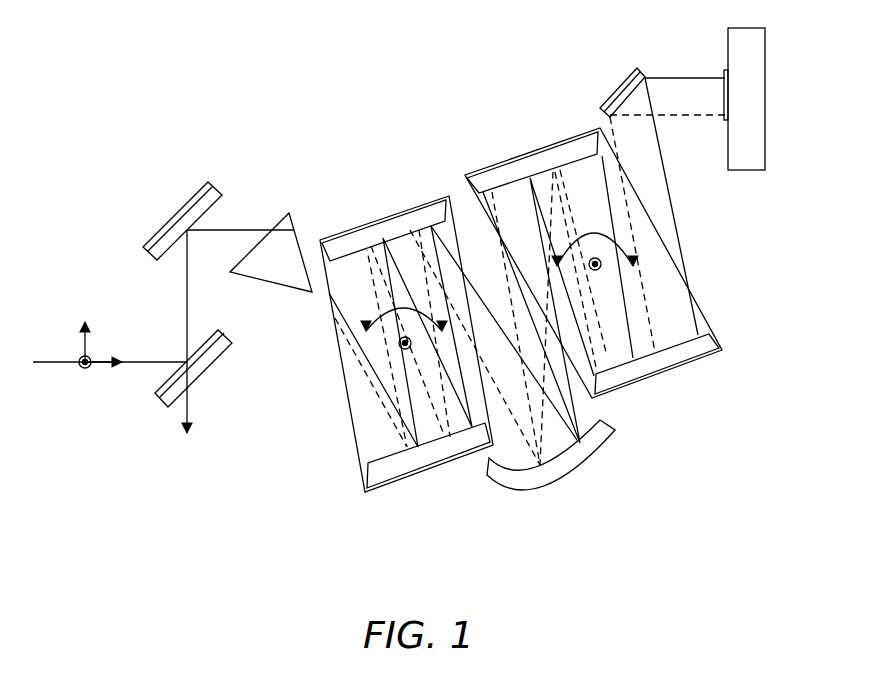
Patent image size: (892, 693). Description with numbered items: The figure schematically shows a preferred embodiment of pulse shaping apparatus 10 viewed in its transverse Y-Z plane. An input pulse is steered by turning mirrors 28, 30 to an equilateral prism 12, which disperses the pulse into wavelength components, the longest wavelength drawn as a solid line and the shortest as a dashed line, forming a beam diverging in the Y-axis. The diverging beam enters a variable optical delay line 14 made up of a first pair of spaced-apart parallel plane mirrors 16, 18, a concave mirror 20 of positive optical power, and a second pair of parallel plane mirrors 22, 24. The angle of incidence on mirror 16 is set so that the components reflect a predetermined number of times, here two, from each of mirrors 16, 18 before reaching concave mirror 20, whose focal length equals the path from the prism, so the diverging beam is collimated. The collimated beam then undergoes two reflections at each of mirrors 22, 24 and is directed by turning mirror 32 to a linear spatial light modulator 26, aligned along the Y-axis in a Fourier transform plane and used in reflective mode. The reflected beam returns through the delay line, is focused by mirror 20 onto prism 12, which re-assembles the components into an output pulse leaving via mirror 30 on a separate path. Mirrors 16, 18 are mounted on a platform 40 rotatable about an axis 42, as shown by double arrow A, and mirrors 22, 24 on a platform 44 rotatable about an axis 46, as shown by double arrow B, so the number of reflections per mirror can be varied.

The pulse shaping apparatus 10 is at (641, 569).
The prism 12 is at (291, 291).
The variable optical delay line 14 is at (757, 410).
The plane mirror 16 is at (386, 452).
The plane mirror 18 is at (400, 233).
The concave mirror 20 is at (612, 436).
The plane mirror 22 is at (515, 182).
The plane mirror 24 is at (675, 350).
The linear spatial light modulator 26 is at (728, 100).
The turning mirror 28 is at (215, 352).
The turning mirror 30 is at (162, 233).
The turning mirror 32 is at (618, 92).
The platform 40 is at (403, 339).
The axis 42 is at (401, 346).
The platform 44 is at (619, 271).
The axis 46 is at (601, 266).